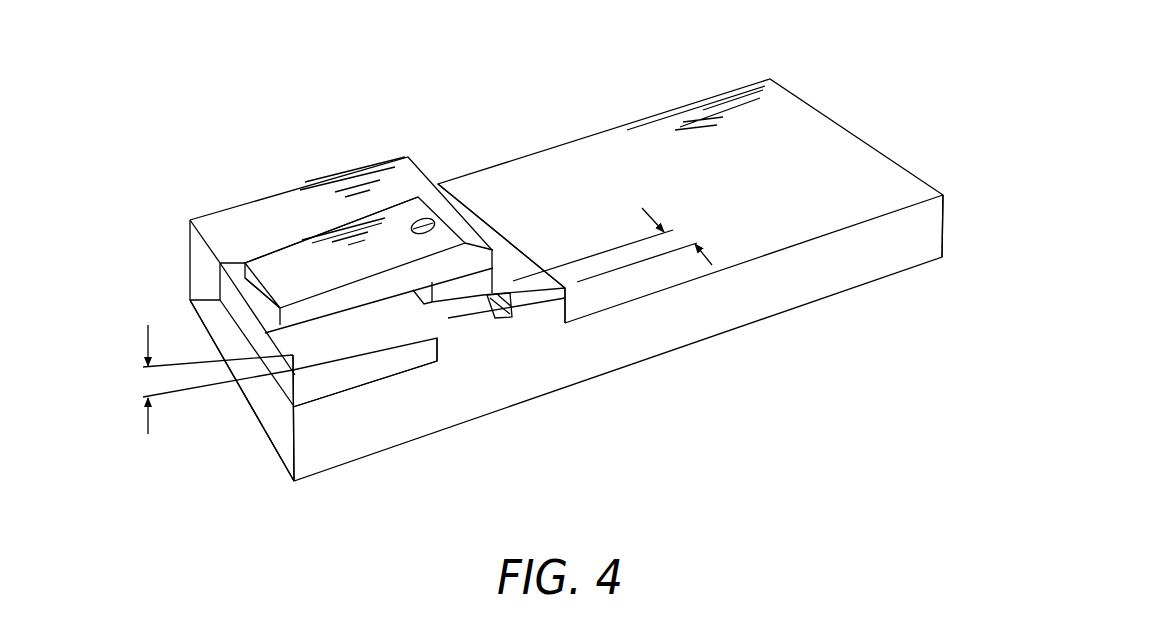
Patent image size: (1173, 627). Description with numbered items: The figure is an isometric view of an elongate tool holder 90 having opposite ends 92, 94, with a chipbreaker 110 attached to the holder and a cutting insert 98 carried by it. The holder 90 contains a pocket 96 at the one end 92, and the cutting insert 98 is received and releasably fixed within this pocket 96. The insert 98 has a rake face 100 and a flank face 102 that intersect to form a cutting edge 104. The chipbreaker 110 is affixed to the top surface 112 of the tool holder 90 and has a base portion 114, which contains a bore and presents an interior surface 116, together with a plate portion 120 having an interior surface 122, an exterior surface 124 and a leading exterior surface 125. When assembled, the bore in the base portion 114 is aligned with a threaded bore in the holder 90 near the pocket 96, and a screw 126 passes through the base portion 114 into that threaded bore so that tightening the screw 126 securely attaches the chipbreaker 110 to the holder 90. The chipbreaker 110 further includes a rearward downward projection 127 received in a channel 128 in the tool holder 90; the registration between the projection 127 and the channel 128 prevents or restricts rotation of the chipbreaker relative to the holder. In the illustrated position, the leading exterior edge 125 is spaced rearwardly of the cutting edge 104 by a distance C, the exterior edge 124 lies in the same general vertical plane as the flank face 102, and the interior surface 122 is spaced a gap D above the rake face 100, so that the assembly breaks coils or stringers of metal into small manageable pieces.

The elongate tool holder 90 is at (808, 87).
The end 92 is at (280, 455).
The end 94 is at (945, 225).
The pocket 96 is at (242, 357).
The cutting insert 98 is at (235, 265).
The rake face 100 is at (268, 243).
The flank face 102 is at (410, 360).
The cutting edge 104 is at (384, 347).
The chipbreaker 110 is at (398, 210).
The top surface 112 is at (205, 218).
The base portion 114 is at (465, 267).
The interior surface 116 is at (416, 292).
The plate portion 120 is at (297, 262).
The interior surface 122 is at (340, 310).
The exterior surface 124 is at (268, 308).
The leading exterior surface 125 is at (312, 312).
The screw 126 is at (442, 222).
The rearward downward projection 127 is at (512, 290).
The channel 128 is at (502, 318).